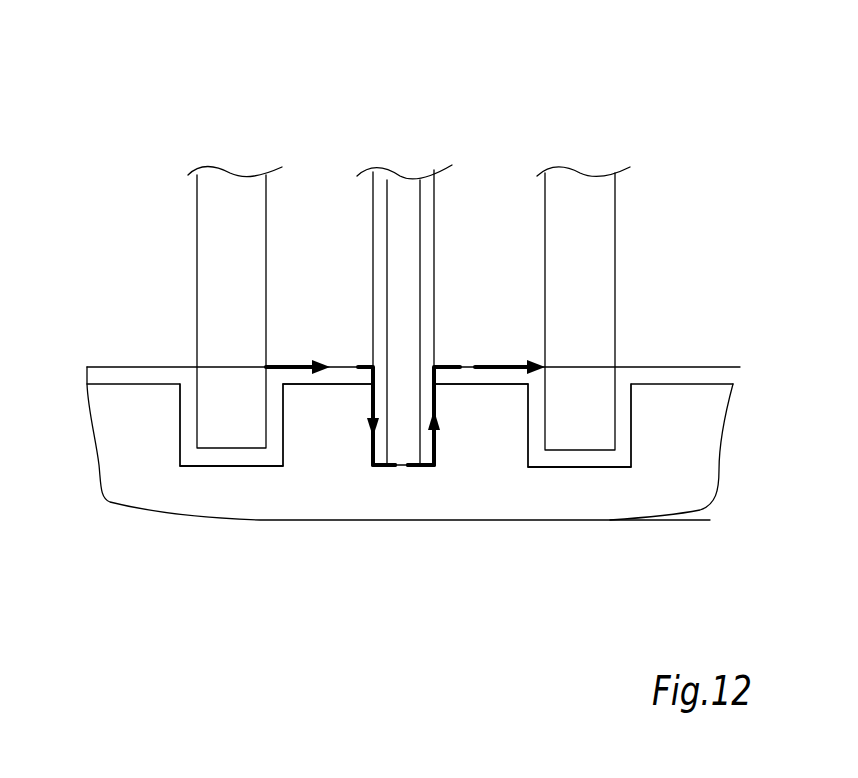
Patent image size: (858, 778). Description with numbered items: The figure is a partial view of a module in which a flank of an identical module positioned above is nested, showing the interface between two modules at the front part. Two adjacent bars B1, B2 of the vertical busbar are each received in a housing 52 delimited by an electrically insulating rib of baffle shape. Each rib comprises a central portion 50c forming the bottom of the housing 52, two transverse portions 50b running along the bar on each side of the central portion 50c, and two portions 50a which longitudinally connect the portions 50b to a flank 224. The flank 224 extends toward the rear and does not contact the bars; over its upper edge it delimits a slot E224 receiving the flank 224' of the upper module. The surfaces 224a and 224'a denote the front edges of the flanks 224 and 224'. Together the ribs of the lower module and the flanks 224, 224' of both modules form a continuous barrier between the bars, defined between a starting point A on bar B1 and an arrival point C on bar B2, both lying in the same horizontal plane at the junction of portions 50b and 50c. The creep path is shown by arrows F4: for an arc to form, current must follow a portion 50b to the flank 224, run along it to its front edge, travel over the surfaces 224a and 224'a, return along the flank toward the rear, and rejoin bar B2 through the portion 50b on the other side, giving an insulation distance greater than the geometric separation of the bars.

The flank 224 is at (414, 189).
The flank of upper module 224' is at (418, 278).
The slot E224 is at (405, 236).
The surface of the edge of flank 224 224a is at (437, 474).
The surface of the edge of flank 224' 224'a is at (409, 514).
The bar B1 is at (222, 200).
The adjacent bar B2 is at (583, 200).
The housing 52 is at (227, 432).
The longitudinal portion of rib 50a is at (355, 372).
The transverse portion of rib 50b is at (187, 408).
The central portion of rib 50c is at (236, 458).
The starting point A is at (262, 366).
The arrival point C is at (550, 366).
The arrows F4 is at (405, 402).